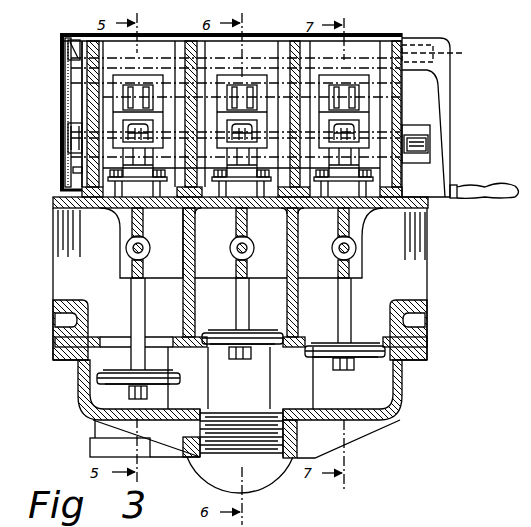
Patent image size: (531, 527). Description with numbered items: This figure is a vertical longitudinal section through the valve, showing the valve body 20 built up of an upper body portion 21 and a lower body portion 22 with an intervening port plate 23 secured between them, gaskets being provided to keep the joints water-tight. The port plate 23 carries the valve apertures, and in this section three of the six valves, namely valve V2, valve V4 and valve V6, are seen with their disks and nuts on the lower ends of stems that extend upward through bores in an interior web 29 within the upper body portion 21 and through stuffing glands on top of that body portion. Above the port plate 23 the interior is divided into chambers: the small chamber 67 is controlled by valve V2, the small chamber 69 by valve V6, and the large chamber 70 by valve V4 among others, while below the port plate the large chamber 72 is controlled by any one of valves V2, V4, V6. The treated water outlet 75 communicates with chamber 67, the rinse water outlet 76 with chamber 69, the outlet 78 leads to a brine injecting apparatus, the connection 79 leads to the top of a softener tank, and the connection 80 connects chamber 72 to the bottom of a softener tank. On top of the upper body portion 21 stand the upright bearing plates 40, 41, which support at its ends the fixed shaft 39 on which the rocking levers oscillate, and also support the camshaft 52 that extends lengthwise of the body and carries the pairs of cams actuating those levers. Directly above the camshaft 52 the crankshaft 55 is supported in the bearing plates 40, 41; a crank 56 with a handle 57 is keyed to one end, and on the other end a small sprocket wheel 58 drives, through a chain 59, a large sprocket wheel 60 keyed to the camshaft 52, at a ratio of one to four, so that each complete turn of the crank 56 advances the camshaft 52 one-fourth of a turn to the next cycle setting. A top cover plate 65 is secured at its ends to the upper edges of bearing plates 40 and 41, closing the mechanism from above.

The small sprocket wheel 58 is at (64, 37).
The chain 59 is at (64, 70).
The bearing plate 40 is at (118, 88).
The camshaft 52 is at (68, 122).
The large sprocket wheel 60 is at (74, 169).
The upper body portion 21 is at (58, 198).
The treated water outlet 75 is at (62, 226).
The rinse water outlet 76 is at (426, 236).
The port plate 23 is at (55, 342).
The valve body 20 is at (72, 367).
The lower body portion 22 is at (82, 396).
The outlet 78 is at (105, 447).
The connection 79 is at (217, 468).
The connection 80 is at (283, 470).
The interior web 29 is at (241, 243).
The small chamber 67 is at (146, 272).
The large chamber 70 is at (246, 272).
The small chamber 69 is at (340, 262).
The valve V2 is at (125, 368).
The valve V4 is at (251, 362).
The valve V6 is at (350, 367).
The large chamber 72 is at (241, 367).
The crankshaft 55 is at (445, 52).
The crank 56 is at (445, 105).
The handle 57 is at (485, 184).
The fixed shaft 39 is at (372, 79).
The bearing plate 41 is at (402, 178).
The top cover plate 65 is at (364, 36).